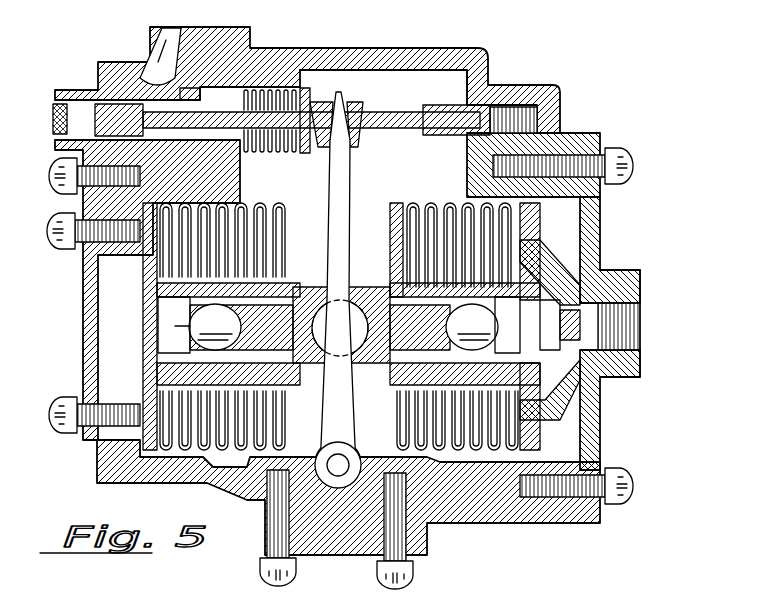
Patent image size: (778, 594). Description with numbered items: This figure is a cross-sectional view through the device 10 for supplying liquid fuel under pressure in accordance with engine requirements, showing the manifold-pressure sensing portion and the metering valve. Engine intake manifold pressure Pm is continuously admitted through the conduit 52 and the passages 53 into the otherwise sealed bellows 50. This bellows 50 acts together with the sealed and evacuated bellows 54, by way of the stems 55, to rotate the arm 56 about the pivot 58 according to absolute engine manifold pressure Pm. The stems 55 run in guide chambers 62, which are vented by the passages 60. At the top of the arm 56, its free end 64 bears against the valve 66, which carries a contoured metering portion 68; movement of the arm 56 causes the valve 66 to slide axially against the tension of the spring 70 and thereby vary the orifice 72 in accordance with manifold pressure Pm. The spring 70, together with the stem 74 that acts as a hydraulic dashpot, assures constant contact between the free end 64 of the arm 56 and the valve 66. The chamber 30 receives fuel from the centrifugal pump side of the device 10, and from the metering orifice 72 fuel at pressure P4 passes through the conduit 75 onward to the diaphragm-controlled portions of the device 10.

The device 10 is at (499, 65).
The chamber 30 is at (436, 70).
The bellows 50 is at (430, 197).
The conduit 52 is at (640, 300).
The passages 53 is at (552, 278).
The sealed and evacuated bellows 54 is at (238, 202).
The stems 55 is at (190, 328).
The arm 56 is at (348, 165).
The pivot 58 is at (350, 460).
The passages 60 is at (175, 326).
The guide chambers 62 is at (160, 304).
The free end 64 is at (340, 96).
The valve 66 is at (262, 92).
The contoured metering portion 68 is at (188, 86).
The spring 70 is at (280, 152).
The orifice 72 is at (225, 86).
The stem 74 is at (386, 113).
The conduit 75 is at (172, 48).
The pressure P4 is at (182, 50).
The engine intake manifold pressure PM is at (572, 280).